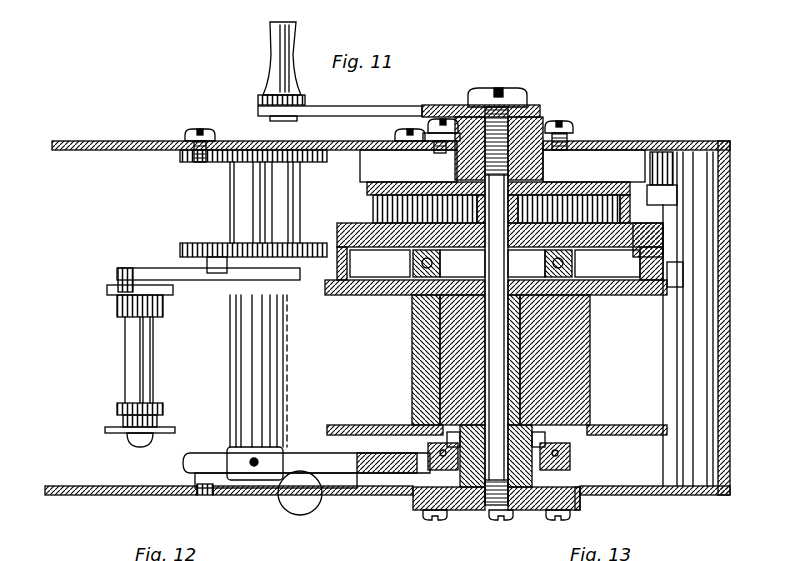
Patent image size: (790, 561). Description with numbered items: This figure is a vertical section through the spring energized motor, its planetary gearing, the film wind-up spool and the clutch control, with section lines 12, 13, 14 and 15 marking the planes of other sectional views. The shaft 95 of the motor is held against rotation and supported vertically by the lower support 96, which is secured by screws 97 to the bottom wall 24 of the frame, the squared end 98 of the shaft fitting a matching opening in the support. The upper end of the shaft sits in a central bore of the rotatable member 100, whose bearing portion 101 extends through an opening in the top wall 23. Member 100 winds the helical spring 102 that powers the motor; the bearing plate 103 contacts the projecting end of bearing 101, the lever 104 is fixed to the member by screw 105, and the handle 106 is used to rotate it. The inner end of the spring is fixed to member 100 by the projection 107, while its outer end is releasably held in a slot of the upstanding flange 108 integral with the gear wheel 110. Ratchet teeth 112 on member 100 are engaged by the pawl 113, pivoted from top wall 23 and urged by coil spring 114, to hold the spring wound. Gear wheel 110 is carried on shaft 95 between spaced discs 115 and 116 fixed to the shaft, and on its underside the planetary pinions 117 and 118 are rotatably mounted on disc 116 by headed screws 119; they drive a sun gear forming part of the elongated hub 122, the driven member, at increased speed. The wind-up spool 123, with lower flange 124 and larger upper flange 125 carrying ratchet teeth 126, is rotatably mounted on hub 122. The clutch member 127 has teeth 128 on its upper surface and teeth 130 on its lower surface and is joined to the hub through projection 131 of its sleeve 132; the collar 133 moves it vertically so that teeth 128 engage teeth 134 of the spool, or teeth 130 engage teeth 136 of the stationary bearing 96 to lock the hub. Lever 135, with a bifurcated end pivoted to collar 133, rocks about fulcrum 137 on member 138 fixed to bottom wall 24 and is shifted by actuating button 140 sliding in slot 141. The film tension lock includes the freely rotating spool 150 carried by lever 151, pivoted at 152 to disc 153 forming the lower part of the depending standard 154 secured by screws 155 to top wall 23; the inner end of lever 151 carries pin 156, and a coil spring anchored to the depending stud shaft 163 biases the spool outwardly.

The section line 12- 12 is at (352, 207).
The section line 13- 13 is at (702, 252).
The section line 14- 14 is at (398, 350).
The section line 15- 15 is at (180, 258).
The top wall 23 is at (80, 151).
The bottom wall 24 is at (80, 485).
The shaft 95 is at (477, 377).
The lower support 96 is at (461, 512).
The screws 97 is at (563, 515).
The squared end 98 is at (490, 517).
The rotatable member 100 is at (620, 187).
The bearing portion 101 is at (567, 173).
The helical spring 102 is at (400, 190).
The bearing plate 103 is at (522, 140).
The lever 104 is at (407, 94).
The screw 105 is at (520, 73).
The handle 106 is at (272, 52).
The projection 107 is at (636, 161).
The upstanding flange 108 is at (636, 187).
The gear wheel 110 is at (665, 232).
The ratchet teeth 112 is at (357, 187).
The pawl 113 is at (668, 185).
The coil spring 114 is at (677, 173).
The disc 115 is at (588, 252).
The disc 116 is at (570, 268).
The pinion 117 is at (545, 272).
The pinion 118 is at (360, 295).
The headed screws 119 is at (370, 296).
The elongated hub 122 is at (477, 337).
The wind-up spool 123 is at (575, 385).
The lower flange 124 is at (592, 437).
The upper flange 125 is at (668, 292).
The ratchet teeth 126 is at (683, 270).
The clutch member 127 is at (443, 470).
The teeth 128 is at (413, 403).
The teeth 130 is at (518, 517).
The projection 131 is at (587, 420).
The sleeve 132 is at (437, 510).
The collar 133 is at (570, 467).
The teeth 134 is at (568, 407).
The lever 135 is at (313, 453).
The teeth 136 is at (580, 497).
The fulcrum 137 is at (253, 458).
The member 138 is at (250, 490).
The actuating button 140 is at (303, 510).
The slot 141 is at (200, 493).
The freely rotating spool 150 is at (133, 352).
The lever 151 is at (190, 283).
The pivot 152 is at (220, 262).
The disc 153 is at (256, 243).
The depending standard 154 is at (250, 173).
The screws 155 is at (192, 134).
The pin 156 is at (280, 290).
The depending stud shaft 163 is at (283, 177).